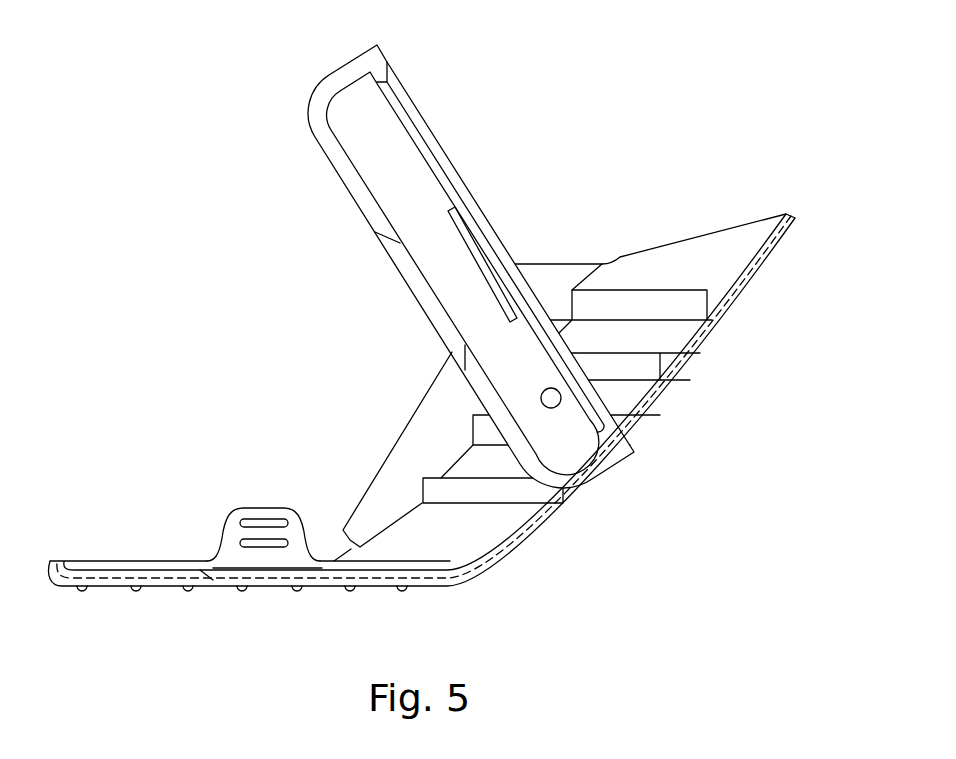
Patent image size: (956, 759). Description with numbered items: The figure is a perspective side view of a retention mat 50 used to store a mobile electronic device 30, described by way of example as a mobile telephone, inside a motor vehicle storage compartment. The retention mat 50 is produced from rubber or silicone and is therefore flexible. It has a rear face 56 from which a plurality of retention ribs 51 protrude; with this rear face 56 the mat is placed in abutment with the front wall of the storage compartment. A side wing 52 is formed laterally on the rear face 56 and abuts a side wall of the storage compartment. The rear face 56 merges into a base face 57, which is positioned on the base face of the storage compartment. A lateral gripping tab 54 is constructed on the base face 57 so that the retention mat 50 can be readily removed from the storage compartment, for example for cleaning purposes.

The mobile electronic device 30 is at (385, 145).
The retention mat 50 is at (724, 361).
The retention ribs 51 is at (622, 300).
The side wing 52 is at (417, 446).
The gripping tab 54 is at (262, 507).
The rear face 56 is at (712, 267).
The base face 57 is at (165, 567).